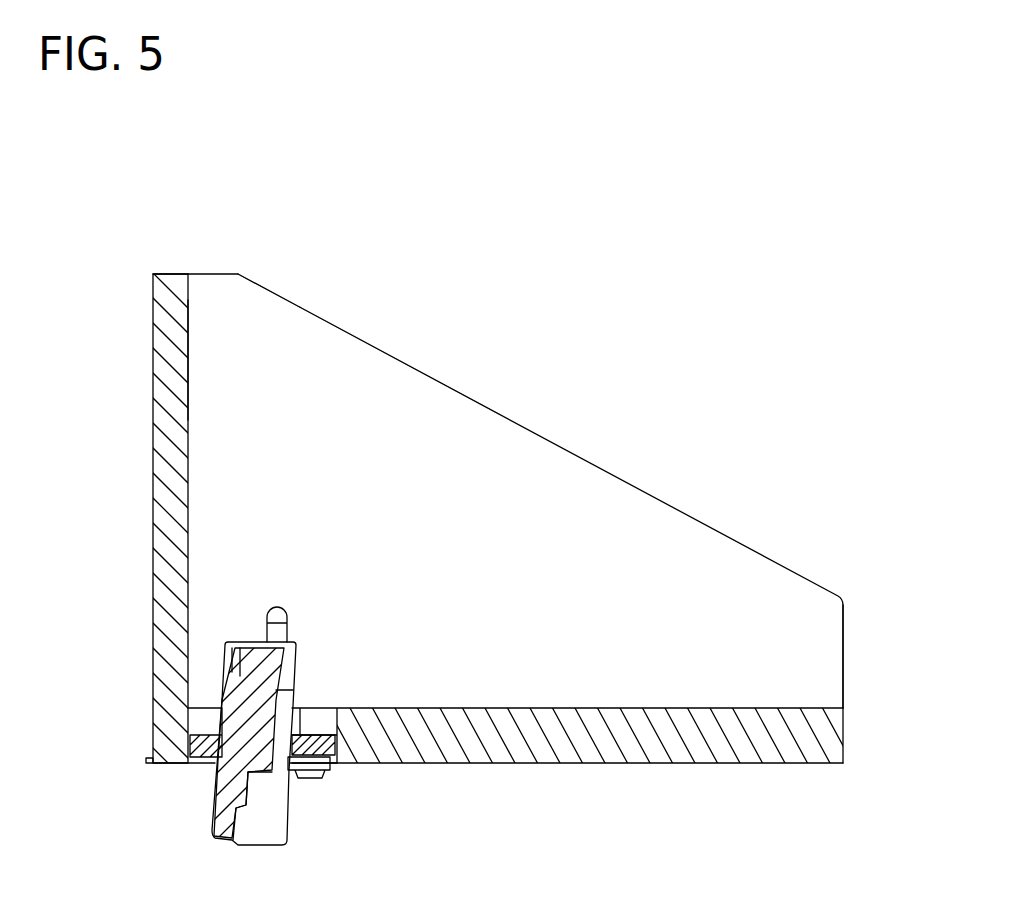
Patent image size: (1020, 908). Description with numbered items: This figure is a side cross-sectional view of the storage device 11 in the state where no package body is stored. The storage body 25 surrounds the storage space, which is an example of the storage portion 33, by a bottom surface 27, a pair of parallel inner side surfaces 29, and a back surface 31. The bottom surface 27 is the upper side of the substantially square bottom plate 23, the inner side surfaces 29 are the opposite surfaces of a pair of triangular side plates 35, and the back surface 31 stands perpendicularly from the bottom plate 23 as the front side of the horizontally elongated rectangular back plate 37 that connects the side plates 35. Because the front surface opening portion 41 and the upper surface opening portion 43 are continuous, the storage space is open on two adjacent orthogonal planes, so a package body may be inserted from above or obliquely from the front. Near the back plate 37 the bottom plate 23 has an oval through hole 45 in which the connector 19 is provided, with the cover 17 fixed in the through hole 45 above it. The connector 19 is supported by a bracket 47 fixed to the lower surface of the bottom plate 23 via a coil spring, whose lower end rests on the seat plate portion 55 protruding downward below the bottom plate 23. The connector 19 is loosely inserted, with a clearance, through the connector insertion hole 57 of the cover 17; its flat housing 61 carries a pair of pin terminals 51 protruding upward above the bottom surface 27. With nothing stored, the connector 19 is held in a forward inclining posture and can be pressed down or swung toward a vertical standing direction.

The storage device 11 is at (150, 180).
The cover 17 is at (322, 735).
The connector 19 is at (239, 627).
The bottom plate 23 is at (835, 735).
The storage body 25 is at (148, 268).
The bottom surface 27 is at (632, 707).
The inner side surfaces 29 is at (502, 455).
The back surface 31 is at (190, 378).
The storage portion 33 is at (319, 345).
The side plates 35 is at (272, 287).
The back plate 37 is at (170, 276).
The front surface opening portion 41 is at (790, 612).
The upper surface opening portion 43 is at (216, 294).
The through hole 45 is at (200, 702).
The bracket 47 is at (148, 763).
The pin terminal 51 is at (284, 607).
The seat plate portion 55 is at (305, 778).
The connector insertion hole 57 is at (242, 770).
The housing 61 is at (248, 693).